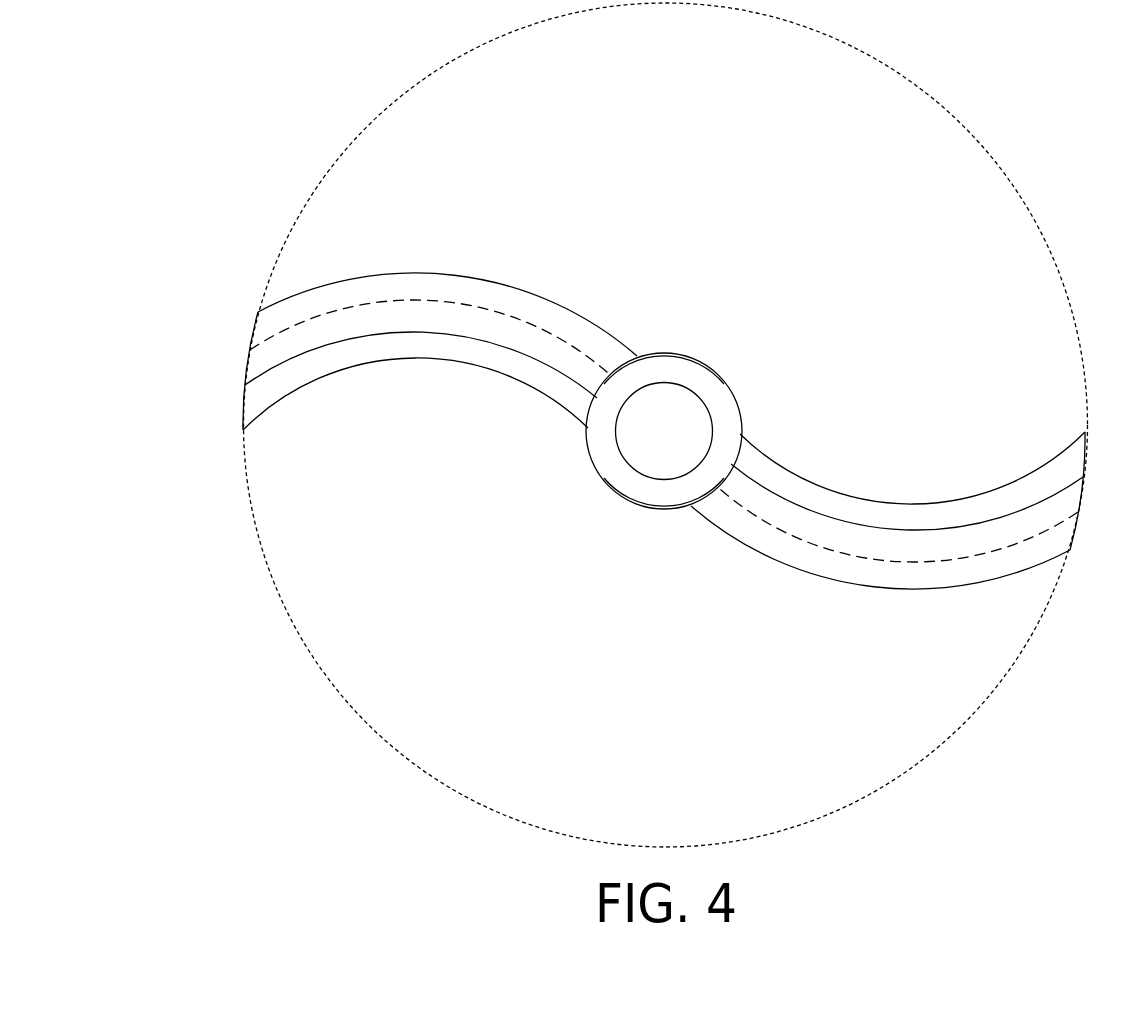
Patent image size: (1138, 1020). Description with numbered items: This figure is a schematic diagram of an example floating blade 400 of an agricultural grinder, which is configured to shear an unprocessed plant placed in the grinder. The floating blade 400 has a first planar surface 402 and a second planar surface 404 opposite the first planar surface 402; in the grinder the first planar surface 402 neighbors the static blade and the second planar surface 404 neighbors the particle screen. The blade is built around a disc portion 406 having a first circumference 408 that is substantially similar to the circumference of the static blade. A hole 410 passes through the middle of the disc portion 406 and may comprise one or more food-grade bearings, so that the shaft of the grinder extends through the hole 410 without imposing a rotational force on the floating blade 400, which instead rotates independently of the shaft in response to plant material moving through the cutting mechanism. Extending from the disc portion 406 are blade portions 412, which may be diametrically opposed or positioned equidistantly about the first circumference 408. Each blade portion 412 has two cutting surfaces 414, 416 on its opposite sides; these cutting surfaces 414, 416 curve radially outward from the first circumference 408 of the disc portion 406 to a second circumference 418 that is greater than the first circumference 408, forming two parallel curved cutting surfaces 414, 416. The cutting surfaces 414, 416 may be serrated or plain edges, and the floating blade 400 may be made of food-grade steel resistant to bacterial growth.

The floating blade 400 is at (637, 425).
The first planar surface 402 is at (663, 431).
The second planar surface 404 is at (648, 522).
The disc portion 406 is at (686, 344).
The first circumference 408 is at (585, 394).
The hole 410 is at (626, 466).
The blade portion 412 is at (390, 351).
The cutting surface 414 is at (888, 535).
The cutting surface 416 is at (927, 602).
The second circumference 418 is at (312, 176).